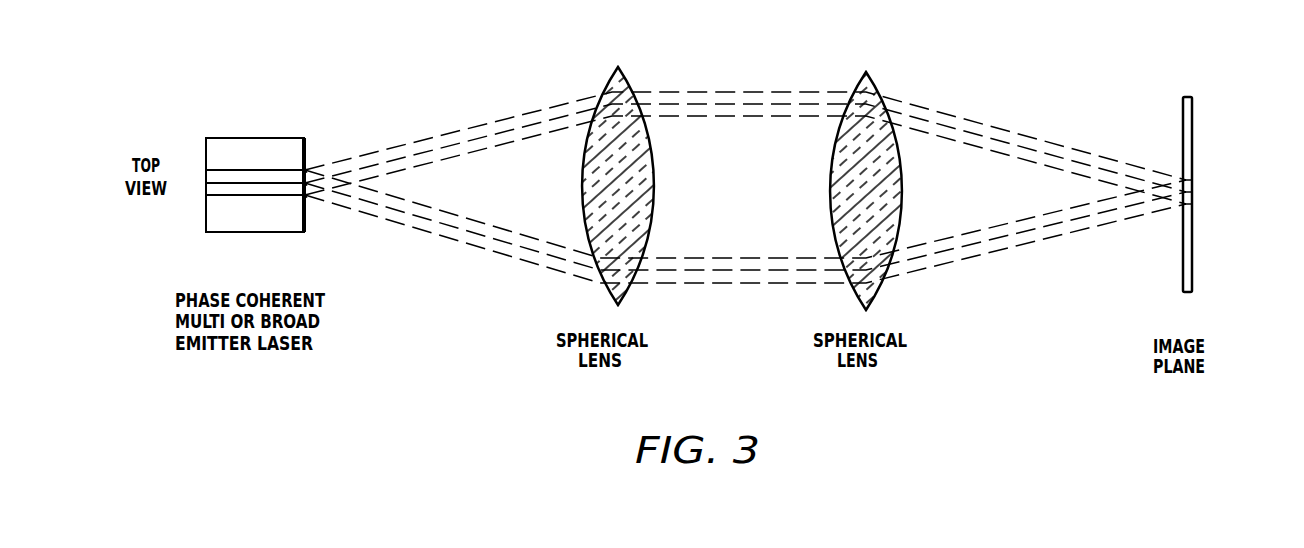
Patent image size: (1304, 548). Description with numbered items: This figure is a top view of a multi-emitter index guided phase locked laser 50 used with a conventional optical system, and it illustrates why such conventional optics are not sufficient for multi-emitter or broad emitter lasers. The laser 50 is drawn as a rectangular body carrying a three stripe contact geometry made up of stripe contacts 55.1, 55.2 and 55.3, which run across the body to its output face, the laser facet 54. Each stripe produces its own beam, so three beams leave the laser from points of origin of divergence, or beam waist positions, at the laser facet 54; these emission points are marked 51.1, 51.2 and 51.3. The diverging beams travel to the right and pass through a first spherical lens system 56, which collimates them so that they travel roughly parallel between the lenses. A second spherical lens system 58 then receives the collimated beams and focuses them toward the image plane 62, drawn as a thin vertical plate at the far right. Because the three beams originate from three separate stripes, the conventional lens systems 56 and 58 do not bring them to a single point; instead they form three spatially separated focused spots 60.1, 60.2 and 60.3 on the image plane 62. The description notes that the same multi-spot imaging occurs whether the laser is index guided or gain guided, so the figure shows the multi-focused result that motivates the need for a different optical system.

The multi-emitter index guided phased locked laser 50 is at (233, 122).
The emitter output / emission point 51.1 is at (306, 170).
The emitter output / emission point 51.2 is at (307, 183).
The emitter output / emission point 51.3 is at (306, 197).
The laser facet 54 is at (306, 233).
The stripe contact 55.1 is at (252, 170).
The stripe contact 55.2 is at (224, 184).
The stripe contact 55.3 is at (238, 196).
The lens system 56 is at (628, 70).
The lens system 58 is at (876, 77).
The spatially focused spot 60.1 is at (1193, 180).
The spatially focused spot 60.2 is at (1193, 193).
The spatially focused spot 60.3 is at (1193, 205).
The image plane 62 is at (1192, 112).